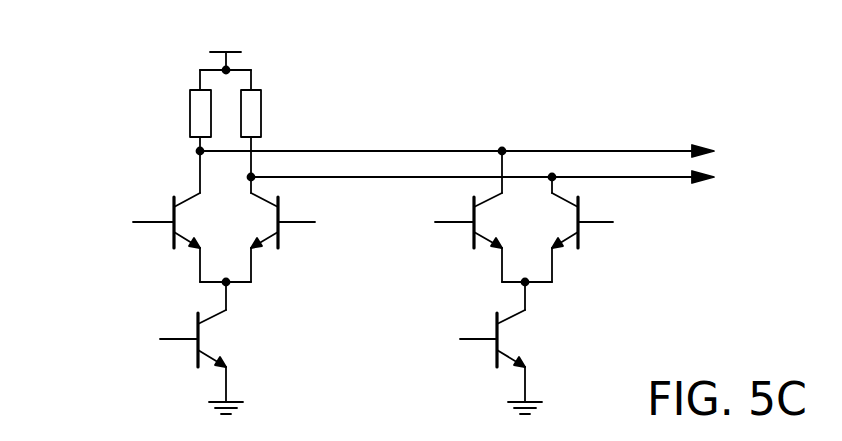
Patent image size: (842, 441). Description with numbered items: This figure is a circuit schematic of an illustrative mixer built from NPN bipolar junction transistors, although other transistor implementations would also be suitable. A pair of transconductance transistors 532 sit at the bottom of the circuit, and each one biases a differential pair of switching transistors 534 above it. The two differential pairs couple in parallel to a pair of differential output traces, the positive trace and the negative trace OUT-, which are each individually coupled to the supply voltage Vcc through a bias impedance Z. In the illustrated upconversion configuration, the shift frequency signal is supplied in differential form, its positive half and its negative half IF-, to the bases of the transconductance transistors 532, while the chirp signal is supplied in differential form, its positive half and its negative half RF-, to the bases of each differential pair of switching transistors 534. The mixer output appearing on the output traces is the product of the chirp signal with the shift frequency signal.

The differential pair of switching transistors 534 is at (88, 191).
The transconductance transistor 532 is at (88, 305).
The supply voltage Vcc is at (225, 59).
The bias impedance Z is at (224, 113).
The differential output trace OUT- is at (512, 176).
The chirp signal in differential form RF- is at (371, 222).
The shift frequency signal in differential form IF- is at (462, 339).